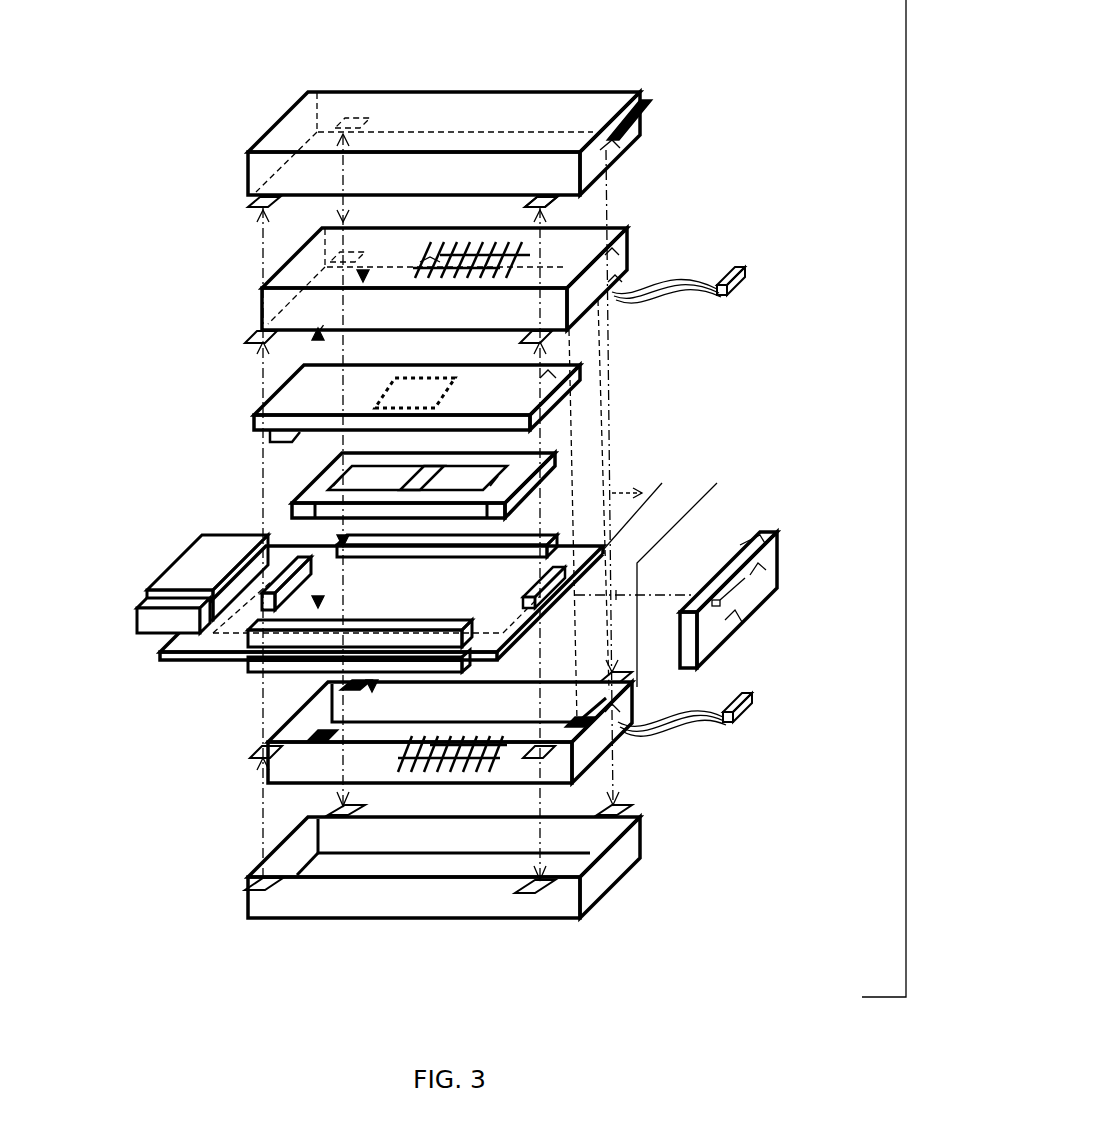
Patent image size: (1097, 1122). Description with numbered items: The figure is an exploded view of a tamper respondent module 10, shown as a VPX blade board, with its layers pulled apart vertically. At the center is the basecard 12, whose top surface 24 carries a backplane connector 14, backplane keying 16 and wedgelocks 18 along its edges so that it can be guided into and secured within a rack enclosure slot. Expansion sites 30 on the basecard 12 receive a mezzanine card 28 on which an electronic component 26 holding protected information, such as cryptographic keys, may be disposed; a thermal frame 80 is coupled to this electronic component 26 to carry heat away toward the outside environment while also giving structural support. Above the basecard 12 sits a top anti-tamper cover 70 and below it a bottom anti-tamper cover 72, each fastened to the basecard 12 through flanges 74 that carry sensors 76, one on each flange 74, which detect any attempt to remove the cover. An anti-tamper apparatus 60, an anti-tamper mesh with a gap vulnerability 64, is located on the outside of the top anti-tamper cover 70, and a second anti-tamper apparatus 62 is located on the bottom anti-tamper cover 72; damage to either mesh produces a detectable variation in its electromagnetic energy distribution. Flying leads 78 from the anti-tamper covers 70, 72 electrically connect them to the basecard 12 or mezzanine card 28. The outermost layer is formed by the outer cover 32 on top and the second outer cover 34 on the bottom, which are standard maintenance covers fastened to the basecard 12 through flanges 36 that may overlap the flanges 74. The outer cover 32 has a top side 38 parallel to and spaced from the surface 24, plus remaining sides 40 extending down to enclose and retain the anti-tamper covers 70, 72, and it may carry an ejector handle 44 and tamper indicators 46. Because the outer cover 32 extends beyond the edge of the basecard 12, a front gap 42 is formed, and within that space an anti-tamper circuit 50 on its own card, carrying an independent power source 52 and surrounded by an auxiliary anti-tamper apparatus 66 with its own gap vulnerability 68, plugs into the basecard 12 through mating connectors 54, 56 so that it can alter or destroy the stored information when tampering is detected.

The tamper respondent module 10 is at (906, 522).
The basecard 12 is at (383, 582).
The backplane connector 14 is at (183, 568).
The backplane keying 16 is at (140, 605).
The wedgelock 18 is at (325, 613).
The surface 24 is at (381, 603).
The electronic component 26 is at (392, 390).
The mezzanine card 28 is at (555, 378).
The expansion site 30 is at (258, 600).
The outer cover 32 is at (444, 112).
The second outer cover 34 is at (622, 855).
The flange 36 is at (552, 187).
The side 38 is at (444, 122).
The remaining sides 40 is at (414, 173).
The front gap 42 is at (704, 493).
The ejector handle 44 is at (643, 97).
The tamper indicators 46 is at (627, 150).
The anti-tamper circuit 50 is at (779, 533).
The power source 52 is at (771, 597).
The mating connector 54 is at (739, 624).
The mating connector 56 is at (548, 607).
The anti-tamper apparatus 60 is at (522, 255).
The second anti-tamper apparatus 62 is at (385, 762).
The mesh gap vulnerability 64 is at (428, 257).
The auxiliary anti-tamper apparatus 66 is at (780, 548).
The auxiliary mesh gap vulnerability 68 is at (779, 556).
The top anti-tamper cover 70 is at (608, 224).
The bottom anti-tamper cover 72 is at (622, 742).
The flange 74 is at (629, 253).
The sensor 76 is at (631, 272).
The flying lead 78 is at (750, 273).
The thermal frame 80 is at (564, 458).